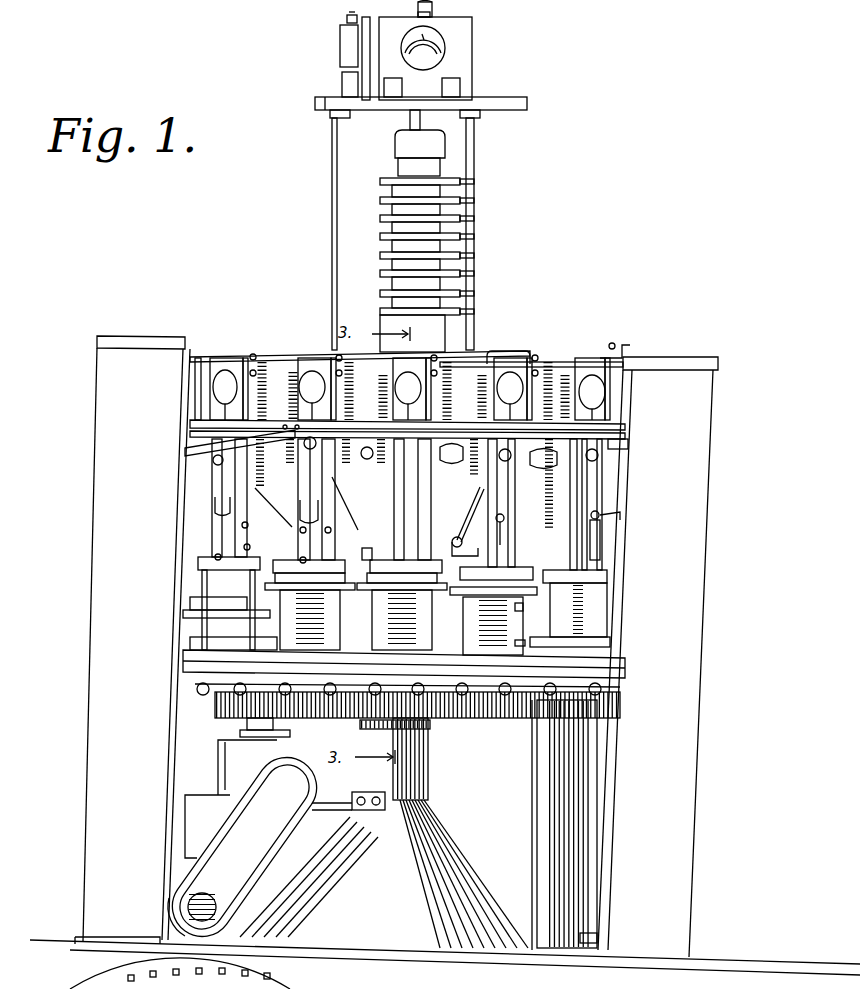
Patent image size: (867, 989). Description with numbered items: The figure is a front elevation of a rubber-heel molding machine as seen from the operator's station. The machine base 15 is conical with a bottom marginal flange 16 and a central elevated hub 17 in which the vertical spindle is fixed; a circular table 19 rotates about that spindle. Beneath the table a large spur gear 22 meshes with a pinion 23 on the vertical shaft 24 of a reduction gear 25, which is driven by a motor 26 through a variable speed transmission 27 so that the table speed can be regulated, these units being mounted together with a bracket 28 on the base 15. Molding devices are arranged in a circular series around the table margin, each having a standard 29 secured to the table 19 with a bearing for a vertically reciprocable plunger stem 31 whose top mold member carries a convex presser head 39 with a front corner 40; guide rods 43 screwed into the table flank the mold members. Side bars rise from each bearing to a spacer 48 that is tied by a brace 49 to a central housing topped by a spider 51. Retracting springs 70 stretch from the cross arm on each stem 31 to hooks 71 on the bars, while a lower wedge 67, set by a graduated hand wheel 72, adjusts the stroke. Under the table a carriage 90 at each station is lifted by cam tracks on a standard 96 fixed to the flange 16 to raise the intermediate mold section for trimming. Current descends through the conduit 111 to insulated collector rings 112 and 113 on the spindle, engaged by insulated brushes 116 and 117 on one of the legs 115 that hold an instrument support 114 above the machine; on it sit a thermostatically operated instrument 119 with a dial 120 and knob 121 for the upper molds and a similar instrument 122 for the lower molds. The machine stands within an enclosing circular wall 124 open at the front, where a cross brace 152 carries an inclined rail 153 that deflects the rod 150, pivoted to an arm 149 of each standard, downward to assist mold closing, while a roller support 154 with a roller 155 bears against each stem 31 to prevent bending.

The machine base 15 is at (455, 872).
The bottom marginal flange 16 is at (445, 955).
The central elevated hub 17 is at (428, 776).
The circular table 19 is at (198, 663).
The spur gear 22 is at (478, 719).
The pinion 23 is at (246, 726).
The vertical shaft 24 is at (290, 737).
The reduction gear 25 is at (240, 762).
The motor 26 is at (225, 860).
The variable speed transmission 27 is at (240, 835).
The bracket 28 is at (330, 802).
The standard 29 is at (312, 626).
The plunger stem 31 is at (394, 488).
The presser head 39 is at (515, 607).
The corner 40 is at (515, 644).
The guide rods 43 is at (367, 547).
The spacer 48 is at (597, 362).
The brace 49 is at (538, 362).
The spider 51 is at (495, 355).
The lower wedge 67 is at (618, 378).
The springs 70 is at (480, 402).
The hooks 71 is at (258, 355).
The hand wheel 72 is at (606, 400).
The carriage 90 is at (215, 694).
The standard 96 is at (590, 772).
The conduit 111 is at (432, 8).
The collector rings 112 is at (385, 200).
The collector rings 113 is at (385, 292).
The support 114 is at (527, 105).
The legs 115 is at (330, 220).
The insulated brushes 116 is at (474, 182).
The insulated brushes 117 is at (474, 293).
The thermostatically operated instrument 119 is at (470, 68).
The dial 120 is at (445, 50).
The knob 121 is at (430, 30).
The thermostatically operated instrument 122 is at (338, 47).
The enclosing circular wall 124 is at (96, 600).
The arm 149 is at (452, 540).
The rod 150 is at (470, 510).
The cross brace 152 is at (628, 445).
The rail 153 is at (290, 437).
The roller support 154 is at (600, 568).
The roller 155 is at (504, 515).